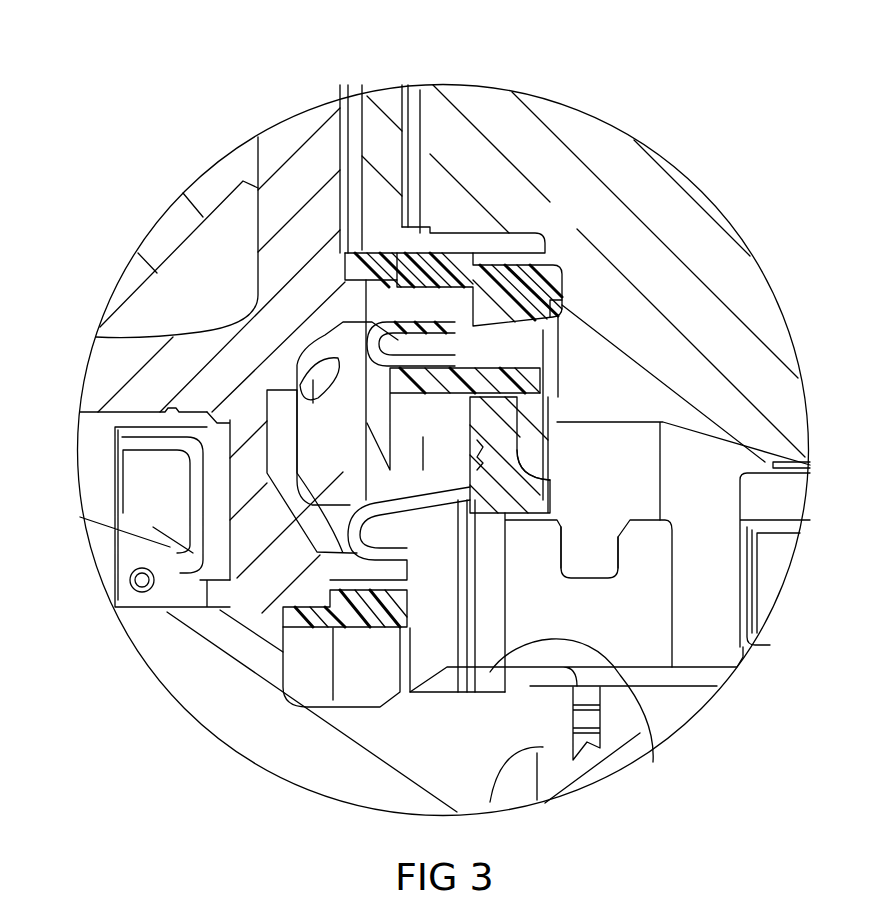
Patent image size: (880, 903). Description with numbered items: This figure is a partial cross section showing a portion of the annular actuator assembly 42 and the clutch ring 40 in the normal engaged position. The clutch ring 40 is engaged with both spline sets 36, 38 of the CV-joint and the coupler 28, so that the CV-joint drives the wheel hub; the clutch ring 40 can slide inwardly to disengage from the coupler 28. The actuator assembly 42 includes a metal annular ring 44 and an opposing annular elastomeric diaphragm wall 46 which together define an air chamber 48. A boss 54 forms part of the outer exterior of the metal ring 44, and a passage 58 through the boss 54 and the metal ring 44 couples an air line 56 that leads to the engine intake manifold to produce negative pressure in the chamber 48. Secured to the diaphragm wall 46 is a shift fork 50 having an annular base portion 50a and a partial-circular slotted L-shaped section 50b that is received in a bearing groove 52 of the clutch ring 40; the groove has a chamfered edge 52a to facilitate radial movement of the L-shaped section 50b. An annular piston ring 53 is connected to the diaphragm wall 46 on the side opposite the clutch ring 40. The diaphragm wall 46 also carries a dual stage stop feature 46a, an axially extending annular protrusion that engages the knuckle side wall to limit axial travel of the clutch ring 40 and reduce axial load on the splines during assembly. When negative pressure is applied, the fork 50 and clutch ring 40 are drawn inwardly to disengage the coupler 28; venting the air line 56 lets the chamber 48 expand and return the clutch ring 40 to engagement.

The coupler 28 is at (675, 710).
The spline set 36 is at (653, 760).
The spline set 38 is at (717, 679).
The clutch ring 40 is at (665, 547).
The annular actuator assembly 42 is at (289, 88).
The metal annular ring 44 is at (105, 355).
The elastomeric diaphragm wall 46 is at (476, 410).
The dual stage stop feature 46a is at (573, 385).
The air chamber 48 is at (330, 415).
The shift fork 50 is at (575, 520).
The annular base portion 50a is at (560, 477).
The L-shaped section 50b is at (603, 542).
The bearing groove 52 is at (620, 540).
The chamfered edge 52a is at (582, 548).
The annular piston ring 53 is at (540, 258).
The boss 54 is at (232, 210).
The air line 56 is at (170, 225).
The passage 58 is at (318, 395).